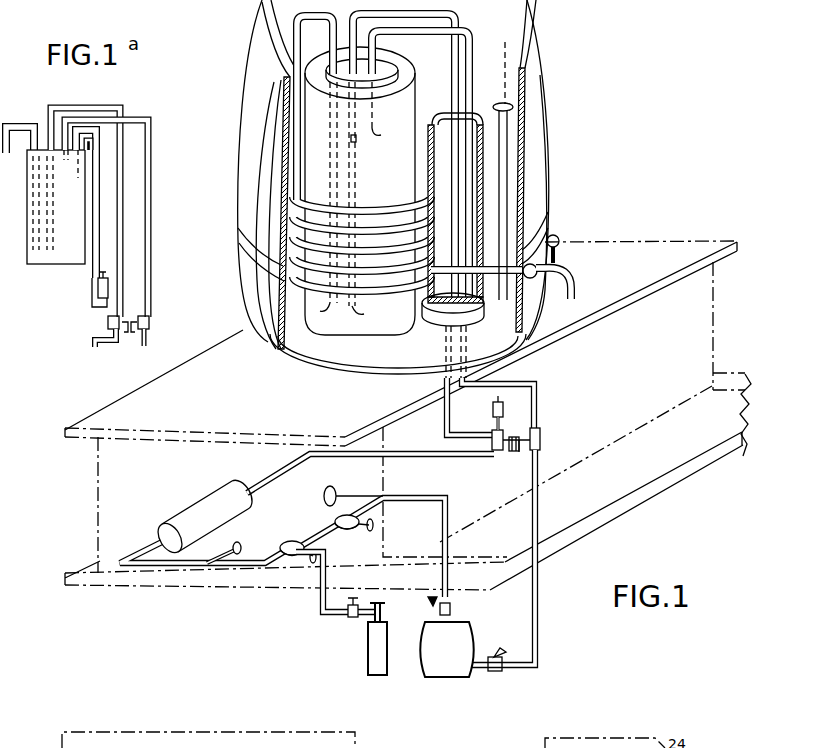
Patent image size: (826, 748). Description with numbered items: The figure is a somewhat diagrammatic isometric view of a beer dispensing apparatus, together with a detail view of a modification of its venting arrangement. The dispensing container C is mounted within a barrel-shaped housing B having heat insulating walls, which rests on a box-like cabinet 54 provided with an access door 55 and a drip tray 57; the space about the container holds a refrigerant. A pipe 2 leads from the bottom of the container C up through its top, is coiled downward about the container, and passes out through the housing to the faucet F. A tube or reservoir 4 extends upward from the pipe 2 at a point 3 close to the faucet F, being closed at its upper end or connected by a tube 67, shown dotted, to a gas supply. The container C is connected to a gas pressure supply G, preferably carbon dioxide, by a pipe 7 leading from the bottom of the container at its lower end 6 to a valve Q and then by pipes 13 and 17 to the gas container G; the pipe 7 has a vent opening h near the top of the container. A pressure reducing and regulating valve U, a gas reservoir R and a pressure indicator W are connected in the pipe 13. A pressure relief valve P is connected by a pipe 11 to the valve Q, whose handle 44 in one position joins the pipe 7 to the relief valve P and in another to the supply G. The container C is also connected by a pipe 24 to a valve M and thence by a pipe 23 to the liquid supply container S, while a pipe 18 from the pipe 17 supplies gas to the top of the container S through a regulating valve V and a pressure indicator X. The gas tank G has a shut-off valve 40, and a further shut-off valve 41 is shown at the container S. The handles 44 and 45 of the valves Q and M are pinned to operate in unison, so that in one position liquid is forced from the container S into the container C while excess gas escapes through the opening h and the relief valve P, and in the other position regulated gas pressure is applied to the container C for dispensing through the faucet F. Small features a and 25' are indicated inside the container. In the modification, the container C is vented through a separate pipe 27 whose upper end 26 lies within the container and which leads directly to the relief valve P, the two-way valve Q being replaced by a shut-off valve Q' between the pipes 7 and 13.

In FIG. 1A, the pipe 2 is at (33, 121).
In FIG. 1A, the pipe 7 is at (104, 105).
In FIG. 1, the pipe 7 is at (446, 438).
In FIG. 1A, the end of pipe 27 26 is at (56, 207).
In FIG. 1A, the pipe 24 is at (151, 187).
In FIG. 1, the pipe 24 is at (537, 386).
In FIG. 1A, the dispensing container C is at (27, 228).
In FIG. 1, the dispensing container C is at (407, 328).
In FIG. 1A, the separate vent pipe 27 is at (92, 276).
In FIG. 1A, the pressure relief valve P is at (98, 293).
In FIG. 1, the pressure relief valve P is at (509, 399).
In FIG. 1A, the shut-off valve Q' is at (103, 324).
In FIG. 1, the valve Q is at (480, 433).
In FIG. 1A, the valve M is at (150, 321).
In FIG. 1, the valve M is at (578, 452).
In FIG. 1A, the pipe 13 is at (95, 345).
In FIG. 1, the pipe 13 is at (428, 452).
In FIG. 1A, the pipe 23 is at (147, 340).
In FIG. 1, the pipe 23 is at (540, 497).
In FIG. 1, the access door 55 is at (405, 343).
In FIG. 1, the drip tray 57 is at (408, 482).
In FIG. 1, the box-like support or cabinet 54 is at (98, 524).
In FIG. 1, the housing B is at (253, 322).
In FIG. 1, the pipe end a is at (327, 203).
In FIG. 1, the lower end of pipe 7 6 is at (358, 198).
In FIG. 1, the pipe 25' is at (368, 123).
In FIG. 1, the vent opening h is at (351, 140).
In FIG. 1, the point 3 is at (508, 276).
In FIG. 1, the tube 67 is at (513, 52).
In FIG. 1, the tube or reservoir 4 is at (518, 172).
In FIG. 1, the faucet F is at (585, 270).
In FIG. 1, the pipe 11 is at (493, 410).
In FIG. 1, the handle of valve Q 44 is at (509, 452).
In FIG. 1, the handle of valve M 45 is at (521, 456).
In FIG. 1, the pipe 18 is at (413, 538).
In FIG. 1, the pressure indicator X is at (330, 488).
In FIG. 1, the pressure reducing and regulating valve U is at (310, 543).
In FIG. 1, the pressure reducing and regulating valve V is at (362, 523).
In FIG. 1, the pressure indicator W is at (258, 553).
In FIG. 1, the gas reservoir R is at (202, 518).
In FIG. 1, the pipe 17 is at (323, 610).
In FIG. 1, the gas pressure supply G is at (377, 639).
In FIG. 1, the shut-off valve 40 is at (376, 604).
In FIG. 1, the valve 41 is at (437, 602).
In FIG. 1, the liquid supply container S is at (447, 649).